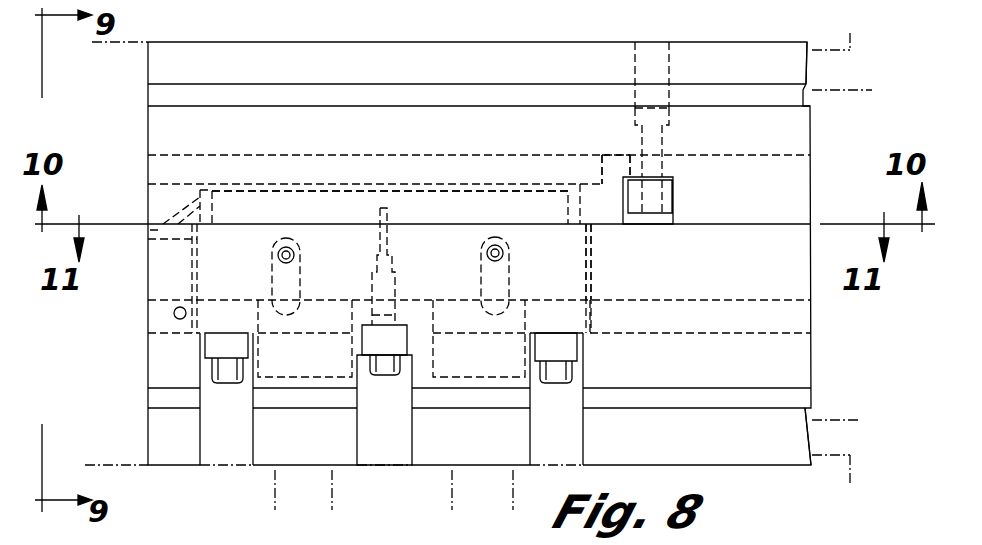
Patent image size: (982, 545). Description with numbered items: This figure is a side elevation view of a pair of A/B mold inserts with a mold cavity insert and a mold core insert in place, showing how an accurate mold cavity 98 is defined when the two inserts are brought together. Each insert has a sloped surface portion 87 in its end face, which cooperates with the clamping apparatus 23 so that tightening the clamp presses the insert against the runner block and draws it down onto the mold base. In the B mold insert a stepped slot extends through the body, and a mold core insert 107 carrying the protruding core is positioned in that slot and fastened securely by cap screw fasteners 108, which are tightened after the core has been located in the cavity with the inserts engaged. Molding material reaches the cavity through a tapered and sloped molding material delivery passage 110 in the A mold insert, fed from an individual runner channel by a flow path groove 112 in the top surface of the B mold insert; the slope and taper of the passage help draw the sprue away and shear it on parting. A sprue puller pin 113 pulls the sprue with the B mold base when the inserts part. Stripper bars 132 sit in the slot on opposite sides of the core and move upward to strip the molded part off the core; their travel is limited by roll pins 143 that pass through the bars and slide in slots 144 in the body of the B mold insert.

The clamping apparatus 23 is at (826, 96).
The sloped surface portion 87 is at (808, 50).
The mold cavity 98 is at (424, 186).
The mold core insert 107 is at (592, 308).
The cap screw fasteners 108 is at (228, 383).
The molding material delivery passage 110 is at (182, 218).
The flow path groove 112 is at (150, 231).
The sprue puller pin 113 is at (388, 250).
The stripper bars 132 is at (590, 256).
The roll pins 143 is at (291, 248).
The slots 144 is at (284, 283).